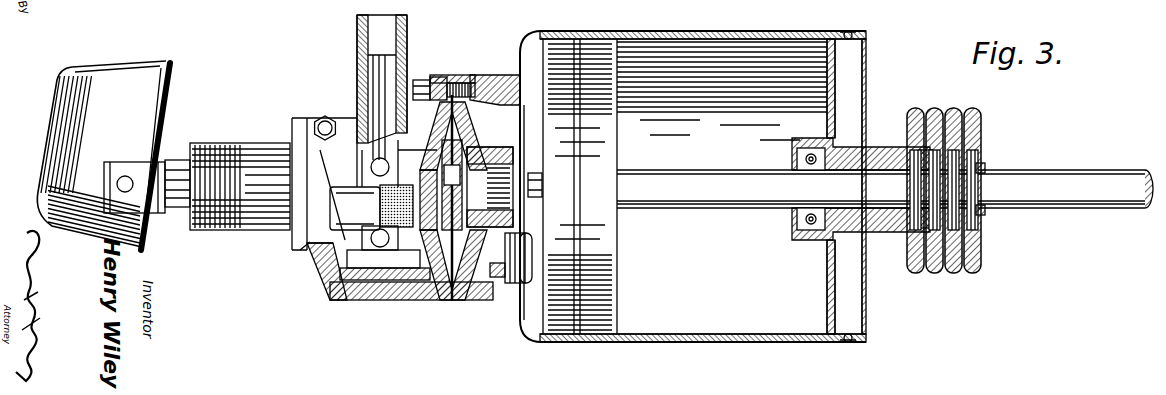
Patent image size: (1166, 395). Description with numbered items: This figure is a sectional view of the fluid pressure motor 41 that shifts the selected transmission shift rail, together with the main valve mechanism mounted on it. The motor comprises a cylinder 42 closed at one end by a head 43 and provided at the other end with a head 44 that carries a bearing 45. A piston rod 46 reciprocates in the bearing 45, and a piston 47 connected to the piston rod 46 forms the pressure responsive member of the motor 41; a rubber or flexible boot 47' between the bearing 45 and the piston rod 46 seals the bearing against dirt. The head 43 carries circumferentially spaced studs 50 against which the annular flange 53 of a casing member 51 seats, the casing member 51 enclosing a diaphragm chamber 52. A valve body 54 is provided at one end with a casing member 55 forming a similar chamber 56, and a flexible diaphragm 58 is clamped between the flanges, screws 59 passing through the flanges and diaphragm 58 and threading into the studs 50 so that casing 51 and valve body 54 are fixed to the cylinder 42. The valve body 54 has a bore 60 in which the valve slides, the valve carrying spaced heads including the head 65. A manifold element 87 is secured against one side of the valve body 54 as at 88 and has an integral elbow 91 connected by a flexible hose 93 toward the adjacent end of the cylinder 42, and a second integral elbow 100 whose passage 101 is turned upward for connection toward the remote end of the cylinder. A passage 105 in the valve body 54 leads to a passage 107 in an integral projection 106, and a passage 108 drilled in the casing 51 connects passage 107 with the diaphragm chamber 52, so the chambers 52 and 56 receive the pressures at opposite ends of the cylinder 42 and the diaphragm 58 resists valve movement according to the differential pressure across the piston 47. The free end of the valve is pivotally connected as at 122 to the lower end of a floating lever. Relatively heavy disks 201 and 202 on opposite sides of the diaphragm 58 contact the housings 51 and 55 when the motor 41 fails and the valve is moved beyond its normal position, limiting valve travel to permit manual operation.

The fluid pressure motor 41 is at (720, 28).
The cylinder 42 is at (756, 344).
The head 43 is at (516, 312).
The head 44 is at (827, 117).
The bearing 45 is at (813, 243).
The piston rod 46 is at (1046, 172).
The piston 47 is at (595, 186).
The flexible boot 47' is at (946, 177).
The studs 50 is at (506, 82).
The casing member 51 is at (524, 141).
The chamber 52 is at (485, 132).
The annular flange 53 is at (458, 80).
The valve body 54 is at (304, 248).
The casing member 55 is at (380, 238).
The chamber 56 is at (445, 82).
The flexible diaphragm 58 is at (447, 284).
The screws 59 is at (478, 80).
The bore 60 is at (437, 160).
The head 65 is at (437, 186).
The manifold element 87 is at (322, 157).
The securing point 88 is at (326, 118).
The elbow 91 is at (352, 193).
The flexible hose 93 is at (380, 206).
The elbow 100 is at (372, 165).
The passage 101 is at (372, 74).
The passage 105 is at (332, 287).
The integral projection 106 is at (360, 301).
The passage 107 is at (402, 290).
The passage 108 is at (483, 290).
The pivot pin 122 is at (127, 177).
The disk 201 is at (465, 176).
The disk 202 is at (478, 205).